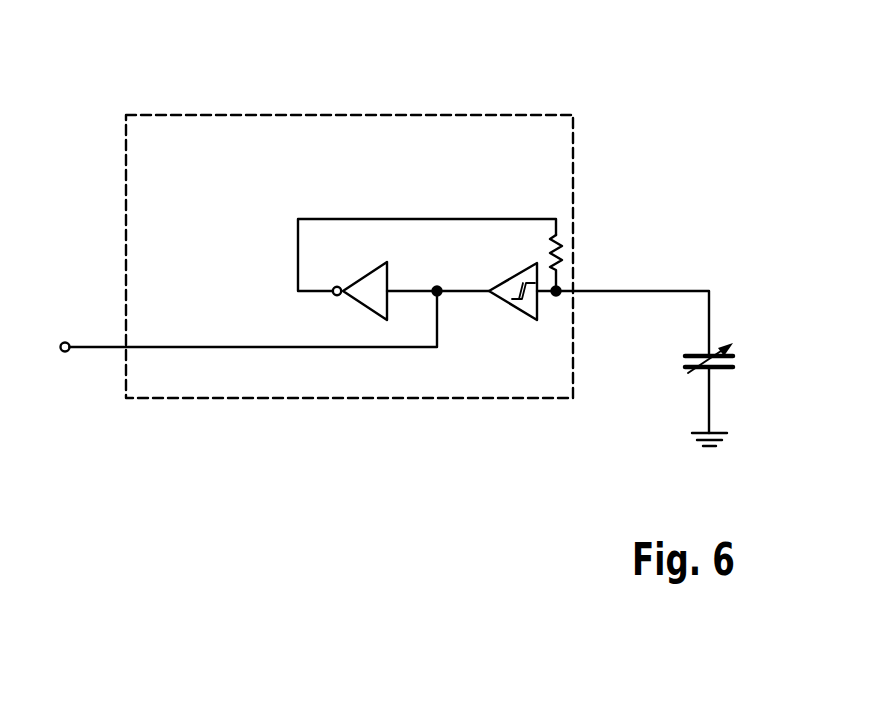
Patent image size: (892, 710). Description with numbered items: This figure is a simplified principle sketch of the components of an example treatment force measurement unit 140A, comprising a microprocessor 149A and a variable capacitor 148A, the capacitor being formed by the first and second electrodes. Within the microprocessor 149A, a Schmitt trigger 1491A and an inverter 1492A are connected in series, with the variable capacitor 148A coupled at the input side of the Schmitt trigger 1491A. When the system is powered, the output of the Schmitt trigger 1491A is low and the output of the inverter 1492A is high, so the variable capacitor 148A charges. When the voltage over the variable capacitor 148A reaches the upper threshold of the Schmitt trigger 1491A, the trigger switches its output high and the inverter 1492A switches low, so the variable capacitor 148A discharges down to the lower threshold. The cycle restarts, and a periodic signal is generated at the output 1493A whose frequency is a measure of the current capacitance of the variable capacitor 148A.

The treatment force measurement unit 140A is at (592, 115).
The microprocessor 149A is at (573, 183).
The inverter 1492A is at (360, 307).
The Schmitt trigger 1491A is at (512, 303).
The output 1493A is at (65, 352).
The variable capacitor 148A is at (733, 363).